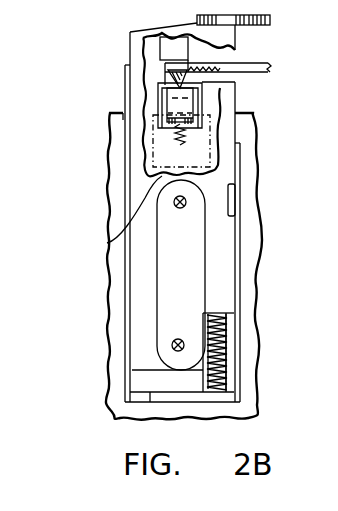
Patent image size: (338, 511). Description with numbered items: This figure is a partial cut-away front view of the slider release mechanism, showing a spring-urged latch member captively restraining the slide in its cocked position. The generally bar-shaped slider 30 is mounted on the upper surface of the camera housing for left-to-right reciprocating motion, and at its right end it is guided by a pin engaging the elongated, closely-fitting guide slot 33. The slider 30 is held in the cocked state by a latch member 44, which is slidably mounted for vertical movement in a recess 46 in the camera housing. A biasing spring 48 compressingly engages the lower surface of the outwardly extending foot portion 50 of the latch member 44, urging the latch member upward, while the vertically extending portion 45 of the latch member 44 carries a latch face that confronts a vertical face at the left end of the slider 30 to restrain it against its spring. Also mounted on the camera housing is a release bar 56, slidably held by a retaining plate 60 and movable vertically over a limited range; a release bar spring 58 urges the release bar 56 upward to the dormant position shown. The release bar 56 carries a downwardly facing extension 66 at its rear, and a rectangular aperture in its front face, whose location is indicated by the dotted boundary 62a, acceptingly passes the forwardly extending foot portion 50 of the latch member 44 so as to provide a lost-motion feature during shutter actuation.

The slider 30 is at (263, 66).
The guide slot 33 is at (40, 88).
The latch member 44 is at (194, 89).
The vertically extending portion 45 is at (158, 96).
The recess 46 is at (206, 163).
The biasing spring 48 is at (154, 148).
The foot portion 50 is at (168, 124).
The release bar 56 is at (230, 277).
The release bar spring 58 is at (227, 367).
The retaining plate 60 is at (157, 333).
The dotted boundary 62a is at (107, 245).
The extension 66 is at (158, 42).